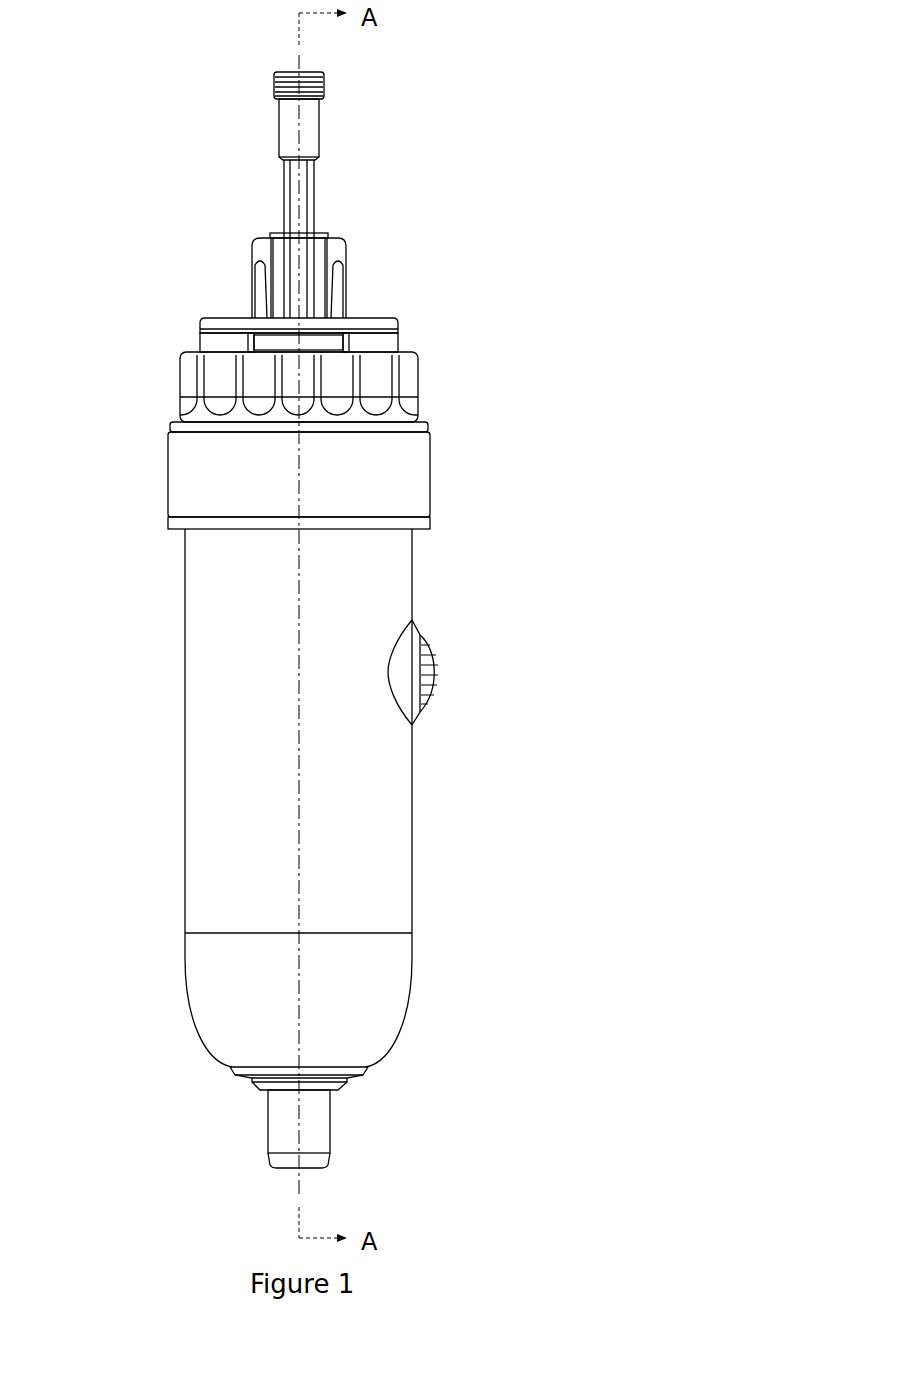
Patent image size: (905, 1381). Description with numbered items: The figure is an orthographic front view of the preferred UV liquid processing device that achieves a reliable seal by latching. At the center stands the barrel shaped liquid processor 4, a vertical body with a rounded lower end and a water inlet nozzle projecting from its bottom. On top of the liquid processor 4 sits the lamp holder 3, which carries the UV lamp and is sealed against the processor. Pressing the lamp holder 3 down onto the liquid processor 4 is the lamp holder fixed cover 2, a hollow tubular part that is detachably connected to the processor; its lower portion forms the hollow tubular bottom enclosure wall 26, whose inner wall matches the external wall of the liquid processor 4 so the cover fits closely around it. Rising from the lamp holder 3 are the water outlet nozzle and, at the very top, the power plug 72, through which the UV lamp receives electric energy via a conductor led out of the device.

The power plug 72 is at (303, 123).
The lamp holder 3 is at (403, 320).
The lamp holder fixed cover 2 is at (376, 476).
The bottom enclosure wall 26 is at (322, 482).
The liquid processor 4 is at (287, 722).